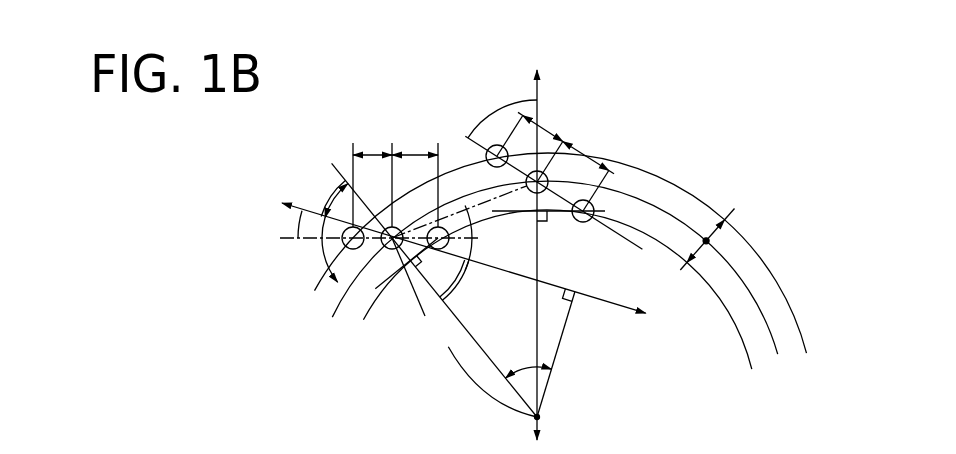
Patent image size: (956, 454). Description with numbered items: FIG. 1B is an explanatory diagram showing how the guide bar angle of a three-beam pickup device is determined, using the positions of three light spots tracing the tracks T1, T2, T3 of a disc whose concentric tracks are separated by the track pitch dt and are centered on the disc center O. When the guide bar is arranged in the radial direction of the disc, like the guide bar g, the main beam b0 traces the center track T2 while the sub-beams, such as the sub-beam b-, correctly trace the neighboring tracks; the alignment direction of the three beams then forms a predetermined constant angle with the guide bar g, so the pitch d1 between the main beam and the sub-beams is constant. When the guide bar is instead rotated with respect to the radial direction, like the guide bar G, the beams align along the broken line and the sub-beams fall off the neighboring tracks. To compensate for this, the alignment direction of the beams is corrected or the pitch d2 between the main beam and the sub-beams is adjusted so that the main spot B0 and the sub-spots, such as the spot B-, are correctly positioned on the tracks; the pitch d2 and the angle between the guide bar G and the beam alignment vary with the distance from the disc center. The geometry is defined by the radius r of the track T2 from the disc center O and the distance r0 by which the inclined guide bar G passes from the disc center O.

The guide bar g is at (545, 100).
The disc center O is at (541, 418).
The track T1 is at (558, 303).
The center track T2 is at (561, 282).
The track T3 is at (570, 264).
The main beam spot B0 is at (386, 248).
The light spot B- is at (440, 249).
The main beam b0 is at (531, 193).
The sub-beam b- is at (582, 222).
The radius of track r is at (434, 290).
The distance r0 is at (579, 293).
The guide bar G is at (634, 313).
The pitch between main beam and sub-beams d1 is at (566, 142).
The pitch between main beam and sub-beams d2 is at (395, 180).
The track pitch dt is at (706, 246).